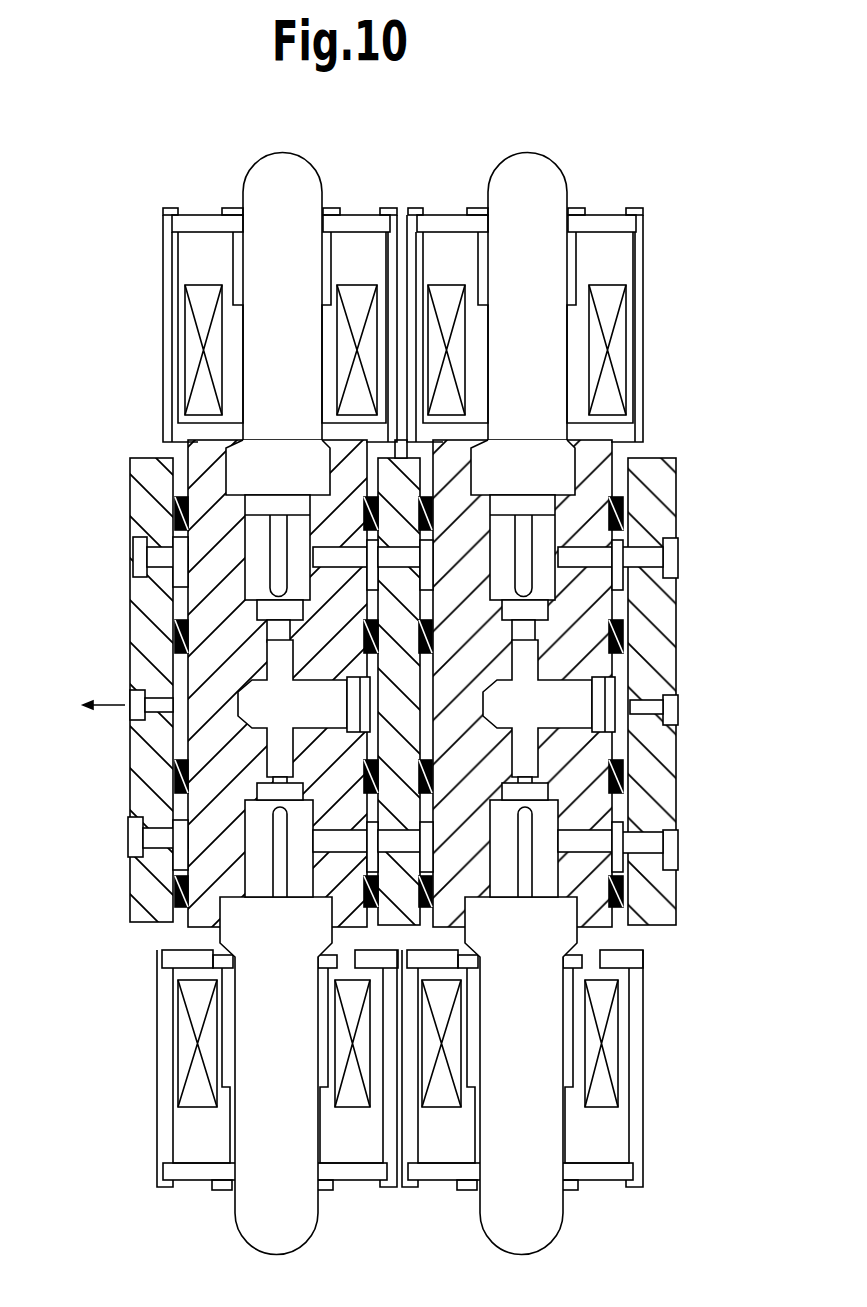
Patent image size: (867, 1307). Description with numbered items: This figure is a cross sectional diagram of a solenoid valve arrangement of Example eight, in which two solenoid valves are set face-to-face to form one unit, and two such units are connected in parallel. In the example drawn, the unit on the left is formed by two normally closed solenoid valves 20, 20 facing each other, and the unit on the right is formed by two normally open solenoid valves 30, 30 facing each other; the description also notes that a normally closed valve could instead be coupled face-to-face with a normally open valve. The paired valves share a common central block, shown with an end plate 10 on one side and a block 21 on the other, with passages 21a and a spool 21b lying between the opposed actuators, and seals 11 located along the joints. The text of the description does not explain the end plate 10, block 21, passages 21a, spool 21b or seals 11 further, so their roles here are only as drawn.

The valve body end plate 10 is at (677, 483).
The seal 11 is at (187, 612).
The solenoid valve 20 is at (333, 188).
The valve block 21 is at (177, 478).
The valve passage 21a is at (250, 556).
The valve spool 21b is at (248, 718).
The solenoid valve 30 is at (537, 697).